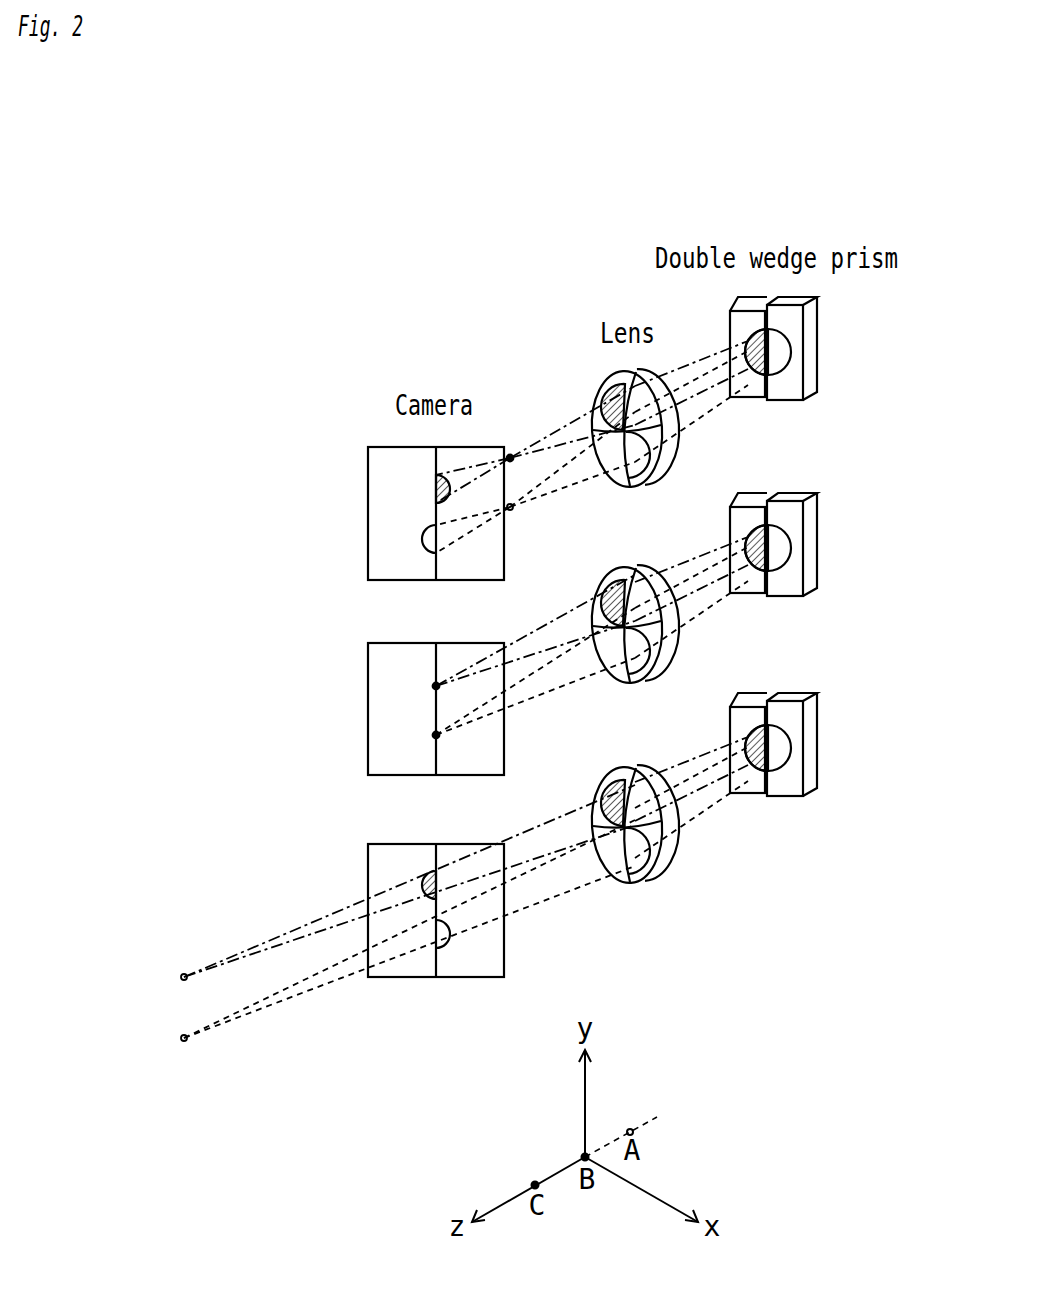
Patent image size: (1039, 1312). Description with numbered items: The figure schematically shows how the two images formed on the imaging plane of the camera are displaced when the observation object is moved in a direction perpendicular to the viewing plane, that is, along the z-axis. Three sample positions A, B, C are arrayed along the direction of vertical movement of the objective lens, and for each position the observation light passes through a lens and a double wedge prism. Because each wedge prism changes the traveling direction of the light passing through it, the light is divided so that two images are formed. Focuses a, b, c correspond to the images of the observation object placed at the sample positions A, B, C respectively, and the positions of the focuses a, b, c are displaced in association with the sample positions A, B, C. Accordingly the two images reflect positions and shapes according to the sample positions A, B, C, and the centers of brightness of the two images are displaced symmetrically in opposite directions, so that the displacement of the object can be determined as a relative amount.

The sample position A is at (361, 483).
The sample position B is at (361, 675).
The sample position C is at (361, 911).
The focus a is at (577, 528).
The focus b is at (439, 735).
The focus c is at (184, 1041).